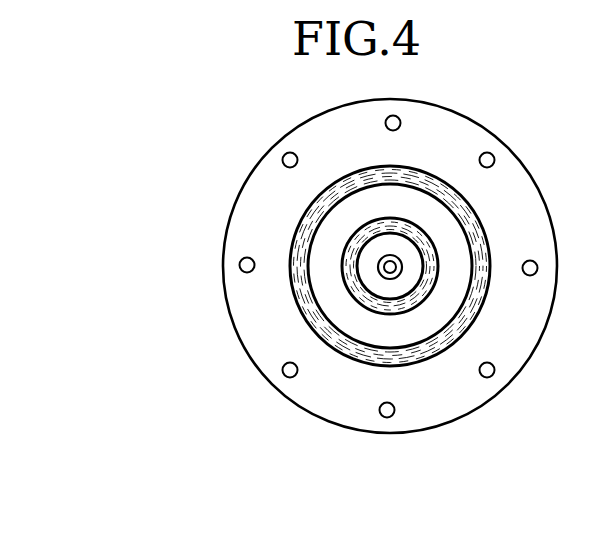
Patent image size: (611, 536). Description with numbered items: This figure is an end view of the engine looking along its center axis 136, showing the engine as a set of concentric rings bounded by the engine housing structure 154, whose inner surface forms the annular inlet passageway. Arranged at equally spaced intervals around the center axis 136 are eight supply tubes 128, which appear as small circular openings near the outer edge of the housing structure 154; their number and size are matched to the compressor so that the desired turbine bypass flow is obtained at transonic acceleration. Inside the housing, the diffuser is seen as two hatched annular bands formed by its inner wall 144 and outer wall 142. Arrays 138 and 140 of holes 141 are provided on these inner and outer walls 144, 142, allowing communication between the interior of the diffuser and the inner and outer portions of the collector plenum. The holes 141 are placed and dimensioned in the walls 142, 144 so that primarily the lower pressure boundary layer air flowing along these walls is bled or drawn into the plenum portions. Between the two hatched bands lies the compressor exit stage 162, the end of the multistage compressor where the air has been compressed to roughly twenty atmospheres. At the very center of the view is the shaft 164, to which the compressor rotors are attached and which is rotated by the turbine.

The supply tubes 128 is at (400, 121).
The center axis 136 is at (373, 135).
The array of holes 138 is at (293, 207).
The array of holes 140 is at (363, 313).
The holes 141 is at (286, 309).
The outer wall 142 is at (352, 251).
The inner wall 144 is at (347, 180).
The engine housing structure 154 is at (507, 192).
The compressor exit stage 162 is at (447, 257).
The shaft 164 is at (394, 279).